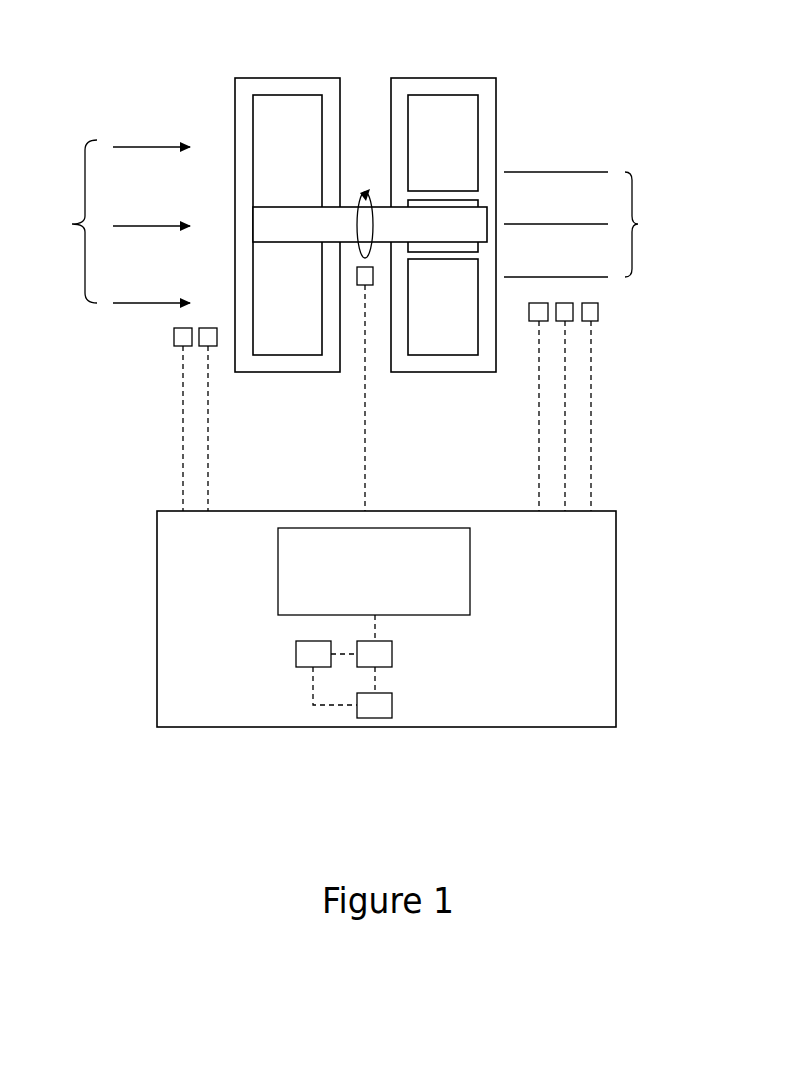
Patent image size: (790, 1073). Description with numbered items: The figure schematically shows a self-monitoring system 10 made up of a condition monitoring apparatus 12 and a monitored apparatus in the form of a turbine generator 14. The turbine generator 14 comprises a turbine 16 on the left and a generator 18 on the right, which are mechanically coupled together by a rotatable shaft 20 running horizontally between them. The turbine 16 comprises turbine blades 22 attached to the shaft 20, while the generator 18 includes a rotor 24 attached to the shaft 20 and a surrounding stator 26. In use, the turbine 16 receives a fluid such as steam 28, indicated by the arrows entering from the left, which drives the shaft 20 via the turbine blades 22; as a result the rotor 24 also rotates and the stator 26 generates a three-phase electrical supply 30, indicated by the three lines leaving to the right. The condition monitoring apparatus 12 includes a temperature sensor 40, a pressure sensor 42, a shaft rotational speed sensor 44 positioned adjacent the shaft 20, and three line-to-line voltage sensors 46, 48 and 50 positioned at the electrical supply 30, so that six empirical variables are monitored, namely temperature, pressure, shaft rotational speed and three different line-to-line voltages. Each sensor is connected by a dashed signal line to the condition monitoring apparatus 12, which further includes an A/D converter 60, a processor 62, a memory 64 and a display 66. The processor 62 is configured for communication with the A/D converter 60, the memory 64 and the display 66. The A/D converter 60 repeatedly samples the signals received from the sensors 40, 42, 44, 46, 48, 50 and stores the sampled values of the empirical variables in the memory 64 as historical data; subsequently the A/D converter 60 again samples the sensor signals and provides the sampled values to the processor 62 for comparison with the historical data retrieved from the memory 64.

The self-monitoring system 10 is at (217, 777).
The condition monitoring apparatus 12 is at (445, 762).
The turbine generator 14 is at (365, 73).
The turbine 16 is at (303, 77).
The generator 18 is at (447, 75).
The rotatable shaft 20 is at (470, 221).
The turbine blades 22 is at (268, 135).
The rotor 24 is at (454, 204).
The stator 26 is at (463, 126).
The steam 28 is at (116, 221).
The three-phase electrical supply 30 is at (588, 224).
The temperature sensor 40 is at (177, 333).
The pressure sensor 42 is at (207, 336).
The shaft rotational speed sensor 44 is at (360, 275).
The line-to-line voltage sensor 46 is at (531, 312).
The line-to-line voltage sensor 48 is at (562, 303).
The line-to-line voltage sensor 50 is at (596, 312).
The A/D converter 60 is at (307, 653).
The processor 62 is at (378, 656).
The memory 64 is at (378, 710).
The display 66 is at (438, 572).